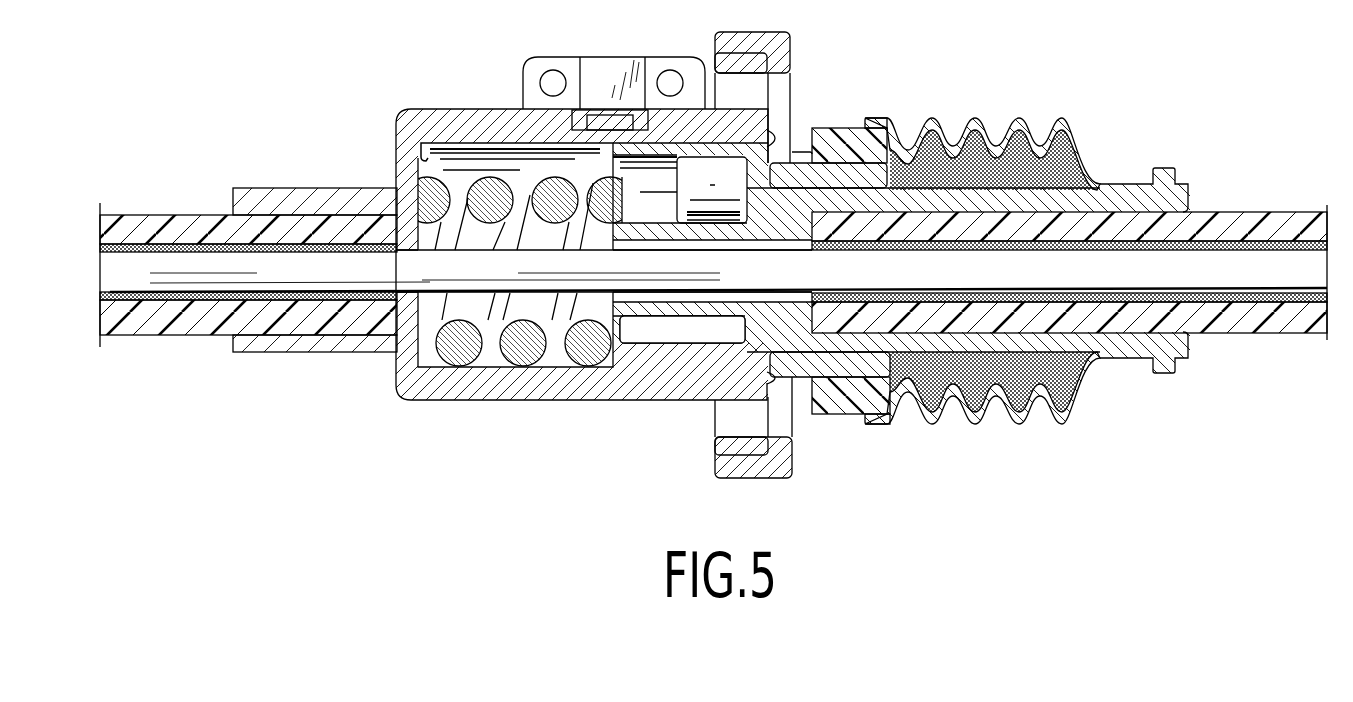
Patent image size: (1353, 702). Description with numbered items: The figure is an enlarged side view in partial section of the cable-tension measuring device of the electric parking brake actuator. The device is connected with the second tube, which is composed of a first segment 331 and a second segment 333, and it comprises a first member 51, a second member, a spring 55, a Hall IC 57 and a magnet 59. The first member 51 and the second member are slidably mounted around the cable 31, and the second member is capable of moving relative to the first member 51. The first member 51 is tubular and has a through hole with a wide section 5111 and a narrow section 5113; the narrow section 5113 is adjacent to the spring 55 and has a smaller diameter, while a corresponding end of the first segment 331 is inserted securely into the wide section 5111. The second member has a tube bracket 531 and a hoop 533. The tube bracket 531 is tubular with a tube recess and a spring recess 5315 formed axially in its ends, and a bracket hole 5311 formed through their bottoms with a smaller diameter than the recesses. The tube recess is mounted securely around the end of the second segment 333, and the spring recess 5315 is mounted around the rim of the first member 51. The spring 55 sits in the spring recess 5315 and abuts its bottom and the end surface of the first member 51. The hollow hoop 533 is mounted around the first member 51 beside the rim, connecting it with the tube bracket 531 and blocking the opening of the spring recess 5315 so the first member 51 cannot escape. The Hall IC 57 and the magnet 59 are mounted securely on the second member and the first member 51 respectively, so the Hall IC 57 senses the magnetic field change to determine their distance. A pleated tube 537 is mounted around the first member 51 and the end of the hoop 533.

The cable 31 is at (203, 260).
The second segment 333 is at (190, 327).
The spring recess 5315 is at (423, 156).
The bracket hole 5311 is at (396, 258).
The Hall IC 57 is at (594, 122).
The magnet 59 is at (732, 173).
The first member 51 is at (1180, 199).
The wide section 5111 is at (1185, 226).
The first segment 331 is at (1223, 320).
The spring 55 is at (447, 353).
The tube bracket 531 is at (503, 393).
The narrow section 5113 is at (703, 283).
The hoop 533 is at (772, 467).
The pleated tube 537 is at (975, 415).